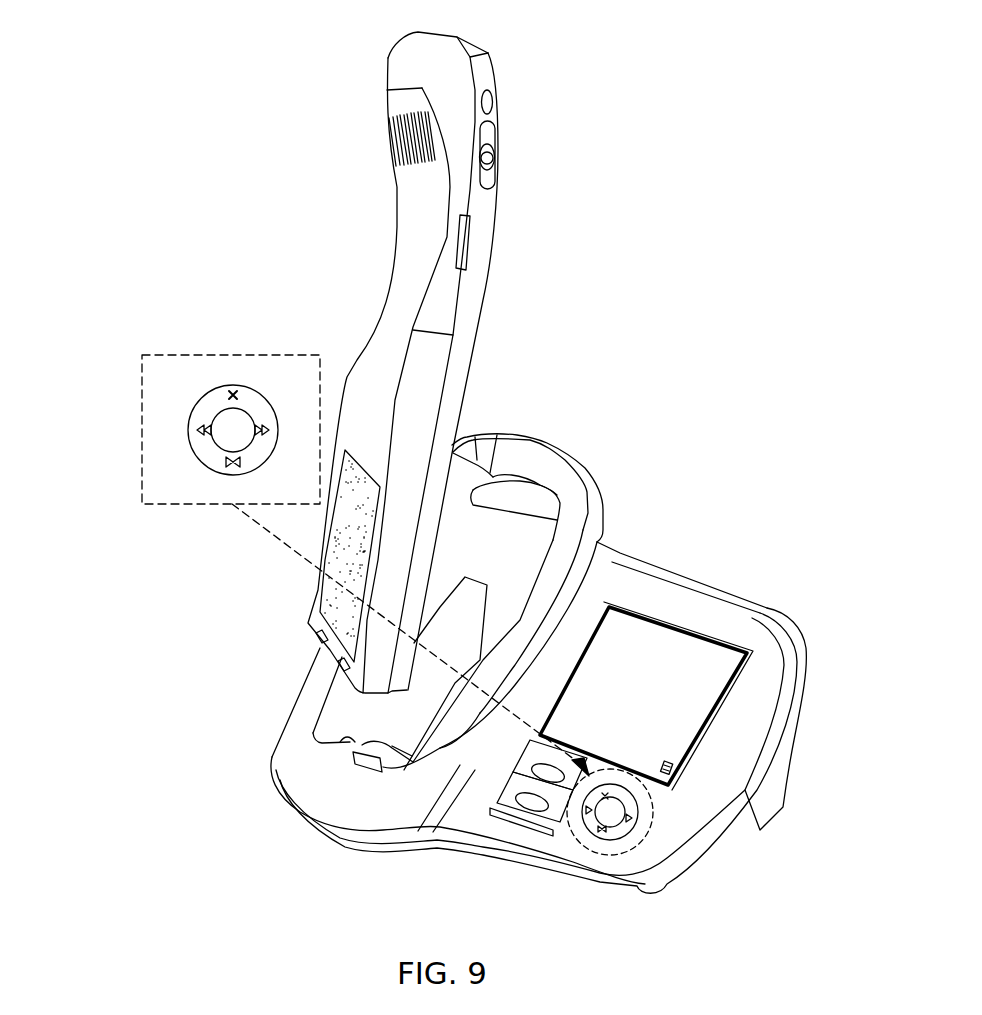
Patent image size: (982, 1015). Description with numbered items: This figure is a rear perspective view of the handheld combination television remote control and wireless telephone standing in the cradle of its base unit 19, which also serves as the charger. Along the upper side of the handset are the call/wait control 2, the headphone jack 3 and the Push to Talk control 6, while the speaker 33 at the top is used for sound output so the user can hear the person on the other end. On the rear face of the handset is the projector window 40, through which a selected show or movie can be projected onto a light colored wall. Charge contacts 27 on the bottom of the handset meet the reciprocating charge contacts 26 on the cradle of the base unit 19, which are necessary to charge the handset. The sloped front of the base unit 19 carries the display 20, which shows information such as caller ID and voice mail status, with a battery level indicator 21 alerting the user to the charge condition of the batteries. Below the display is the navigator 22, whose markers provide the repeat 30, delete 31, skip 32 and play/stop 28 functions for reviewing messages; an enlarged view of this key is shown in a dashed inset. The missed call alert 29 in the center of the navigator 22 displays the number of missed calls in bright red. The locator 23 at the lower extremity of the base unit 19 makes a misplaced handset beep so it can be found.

The call/wait 2 is at (498, 97).
The headphone jack 3 is at (495, 158).
The Push to Talk (PTT) 6 is at (488, 248).
The base unit 19 is at (605, 505).
The display 20 is at (630, 613).
The battery level 21 is at (675, 768).
The navigator 22 is at (645, 837).
The locator 23 is at (512, 837).
The charge contacts 26 is at (365, 767).
The charge contacts 27 is at (340, 665).
The play/stop 28 is at (207, 498).
The missed call alert 29 is at (227, 440).
The repeat 30 is at (158, 432).
The delete 31 is at (232, 385).
The skip 32 is at (292, 410).
The speaker 33 is at (393, 140).
The projector window 40 is at (322, 600).